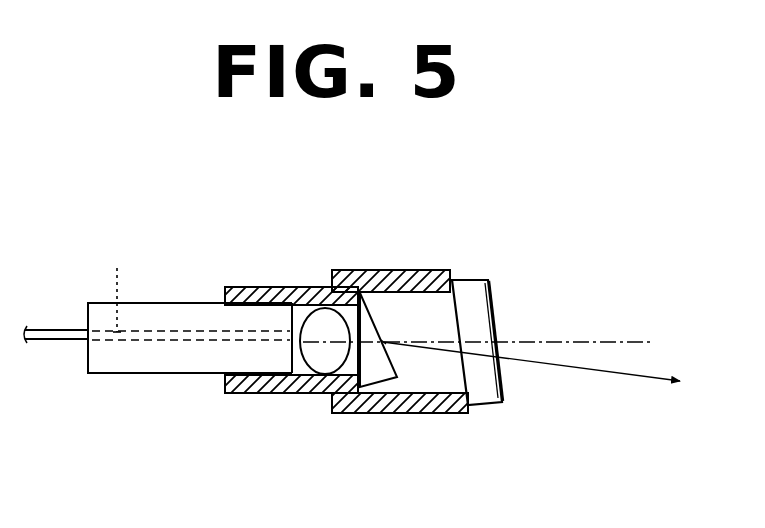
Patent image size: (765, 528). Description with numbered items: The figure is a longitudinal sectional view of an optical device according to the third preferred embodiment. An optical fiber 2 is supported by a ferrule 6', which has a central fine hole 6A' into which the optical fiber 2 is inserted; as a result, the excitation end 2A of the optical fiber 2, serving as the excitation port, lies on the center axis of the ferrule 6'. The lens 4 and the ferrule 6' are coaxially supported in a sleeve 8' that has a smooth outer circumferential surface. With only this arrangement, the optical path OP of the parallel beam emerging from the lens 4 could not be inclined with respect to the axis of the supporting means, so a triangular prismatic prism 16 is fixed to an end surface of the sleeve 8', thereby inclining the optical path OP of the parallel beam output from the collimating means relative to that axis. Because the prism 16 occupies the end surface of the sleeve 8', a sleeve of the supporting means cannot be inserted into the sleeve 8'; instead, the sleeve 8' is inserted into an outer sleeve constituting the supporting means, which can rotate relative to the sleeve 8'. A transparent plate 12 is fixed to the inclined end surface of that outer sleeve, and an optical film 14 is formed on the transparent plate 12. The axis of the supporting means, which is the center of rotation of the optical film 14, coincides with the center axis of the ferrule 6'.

The optical fiber 2 is at (61, 327).
The ferrule 6' is at (190, 378).
The central fine hole 6A' is at (123, 284).
The excitation end 2A is at (292, 337).
The sleeve 8' is at (276, 369).
The lens 4 is at (310, 394).
The triangular prismatic prism 16 is at (386, 380).
The transparent plate 12 is at (485, 406).
The optical film 14 is at (490, 287).
The optical path OP is at (600, 378).